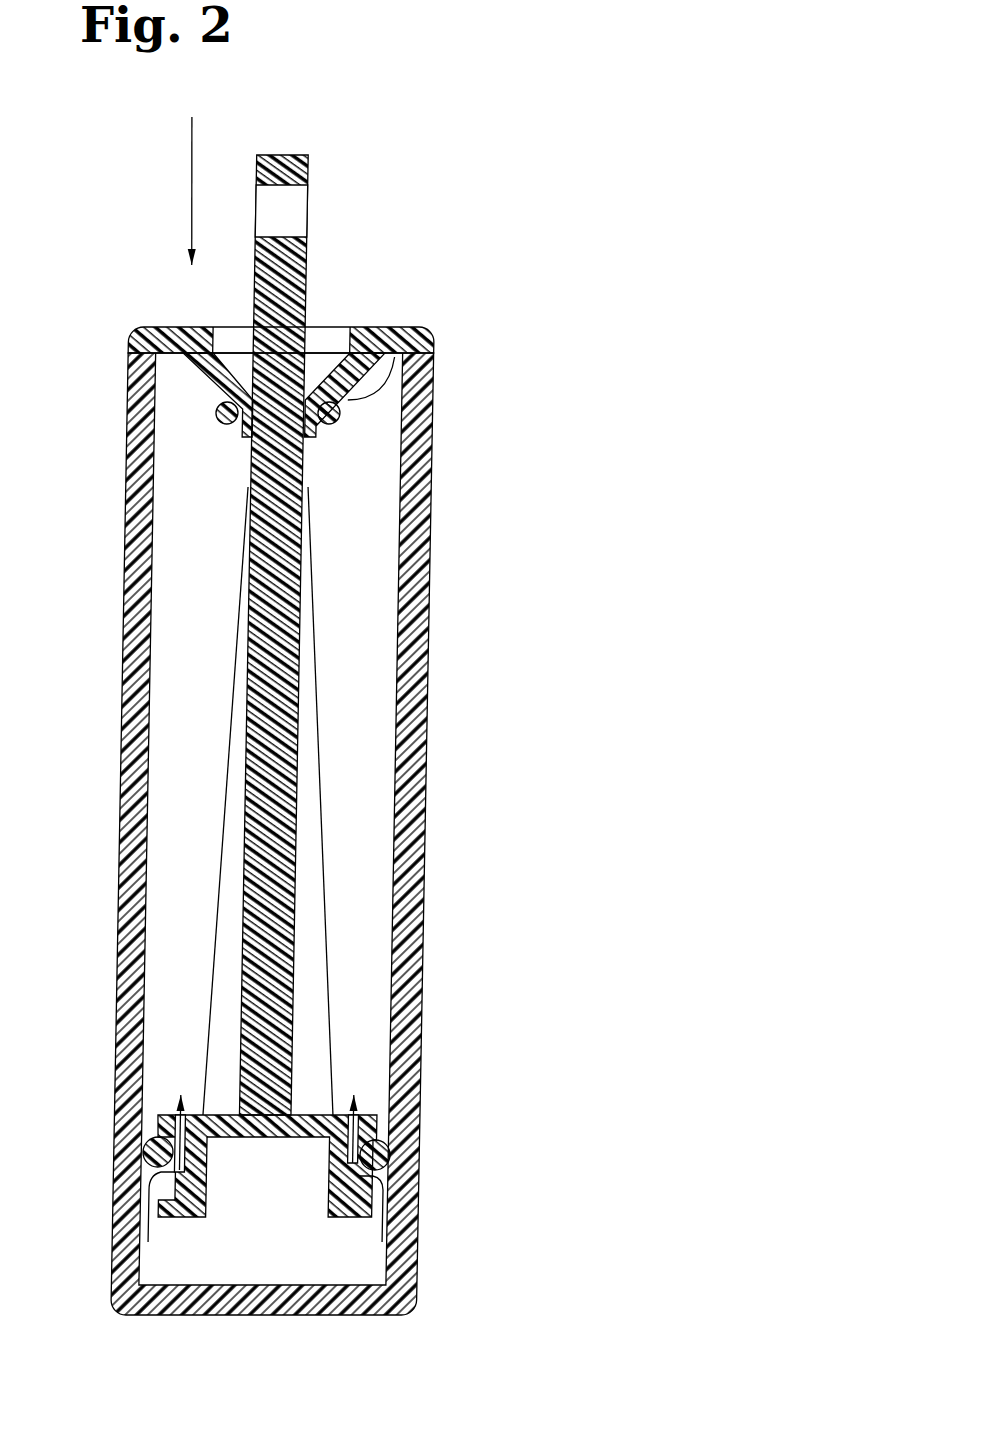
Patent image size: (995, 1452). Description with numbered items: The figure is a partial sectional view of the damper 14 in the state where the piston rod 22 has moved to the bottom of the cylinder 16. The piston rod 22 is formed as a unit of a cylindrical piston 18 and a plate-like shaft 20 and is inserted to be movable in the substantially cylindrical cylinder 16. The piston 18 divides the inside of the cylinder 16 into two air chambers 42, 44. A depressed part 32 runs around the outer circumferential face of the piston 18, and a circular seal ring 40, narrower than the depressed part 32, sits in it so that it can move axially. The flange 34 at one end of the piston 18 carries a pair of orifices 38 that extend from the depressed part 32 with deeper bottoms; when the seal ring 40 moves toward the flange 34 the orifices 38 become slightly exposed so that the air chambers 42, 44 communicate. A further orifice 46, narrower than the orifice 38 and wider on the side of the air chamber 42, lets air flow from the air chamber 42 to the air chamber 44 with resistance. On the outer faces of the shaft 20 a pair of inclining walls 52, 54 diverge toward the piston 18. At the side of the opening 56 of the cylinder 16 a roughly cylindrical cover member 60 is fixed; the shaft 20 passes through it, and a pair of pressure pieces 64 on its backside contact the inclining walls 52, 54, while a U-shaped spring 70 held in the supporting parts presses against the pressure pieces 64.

The damper 14 is at (386, 716).
The cylinder 16 is at (441, 624).
The piston 18 is at (392, 1107).
The shaft 20 is at (323, 545).
The piston rod 22 is at (335, 265).
The depressed part 32 is at (406, 1190).
The flange 34 is at (388, 1128).
The orifice 38 is at (392, 1140).
The seal ring 40 is at (401, 1157).
The air chamber 42 is at (392, 753).
The air chamber 44 is at (307, 1273).
The orifice 46 is at (246, 1118).
The inclining wall 52 is at (330, 938).
The inclining wall 54 is at (244, 942).
The opening 56 is at (404, 330).
The cover member 60 is at (439, 335).
The pressure piece 64 is at (229, 387).
The spring 70 is at (341, 427).